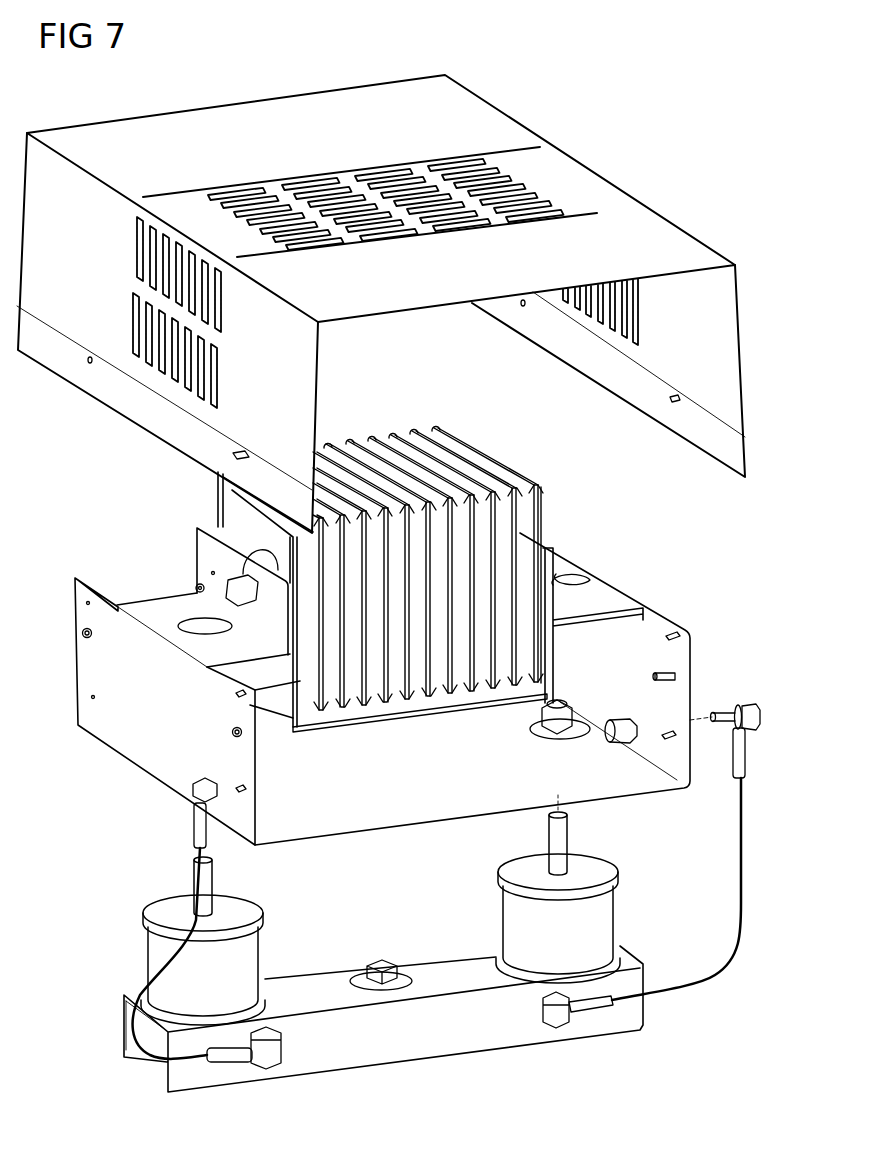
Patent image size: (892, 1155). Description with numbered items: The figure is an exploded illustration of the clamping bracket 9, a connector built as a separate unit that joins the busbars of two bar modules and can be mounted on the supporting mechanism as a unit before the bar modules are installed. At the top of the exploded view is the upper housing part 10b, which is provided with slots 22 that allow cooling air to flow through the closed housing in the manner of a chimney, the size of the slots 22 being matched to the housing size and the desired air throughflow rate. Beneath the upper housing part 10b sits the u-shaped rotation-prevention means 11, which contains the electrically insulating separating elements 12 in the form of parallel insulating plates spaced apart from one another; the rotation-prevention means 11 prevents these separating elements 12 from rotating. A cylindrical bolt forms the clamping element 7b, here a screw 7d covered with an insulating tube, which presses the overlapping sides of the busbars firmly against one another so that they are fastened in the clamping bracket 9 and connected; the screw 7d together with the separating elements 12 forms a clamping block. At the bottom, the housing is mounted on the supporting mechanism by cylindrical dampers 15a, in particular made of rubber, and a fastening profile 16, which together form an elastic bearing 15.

The clamping bracket 9 is at (658, 108).
The upper housing part 10b is at (690, 248).
The slots 22 is at (530, 190).
The separating elements 12 is at (500, 478).
The rotation-prevention means 11 is at (597, 778).
The screw 7d is at (210, 575).
The clamping element 7b is at (223, 606).
The elastic bearing 15 is at (496, 1056).
The dampers 15a is at (605, 907).
The fastening profile 16 is at (372, 1050).